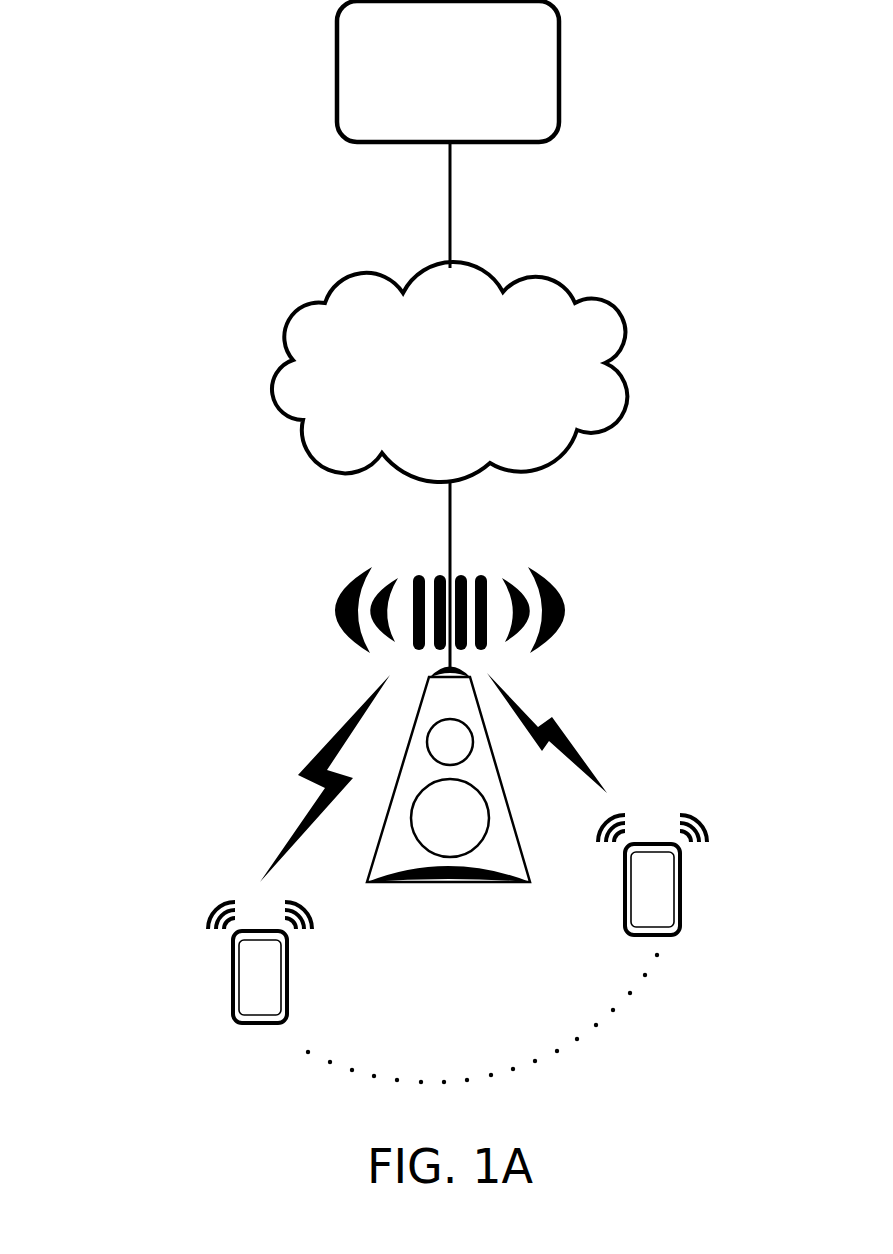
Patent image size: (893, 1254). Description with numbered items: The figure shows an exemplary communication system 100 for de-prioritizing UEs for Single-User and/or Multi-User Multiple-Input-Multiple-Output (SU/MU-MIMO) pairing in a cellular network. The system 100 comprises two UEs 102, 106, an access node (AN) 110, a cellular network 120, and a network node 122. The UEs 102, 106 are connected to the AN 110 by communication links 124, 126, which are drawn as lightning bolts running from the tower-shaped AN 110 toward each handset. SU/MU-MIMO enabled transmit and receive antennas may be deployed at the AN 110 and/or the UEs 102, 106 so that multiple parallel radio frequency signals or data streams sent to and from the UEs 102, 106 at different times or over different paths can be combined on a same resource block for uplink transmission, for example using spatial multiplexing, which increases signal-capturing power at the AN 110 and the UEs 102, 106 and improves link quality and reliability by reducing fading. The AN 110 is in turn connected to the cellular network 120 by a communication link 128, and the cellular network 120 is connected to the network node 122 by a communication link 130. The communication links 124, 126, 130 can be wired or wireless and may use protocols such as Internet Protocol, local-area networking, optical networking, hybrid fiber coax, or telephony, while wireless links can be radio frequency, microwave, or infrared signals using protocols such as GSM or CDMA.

The communication system 100 is at (78, 1045).
The UE 102 is at (682, 907).
The UE 106 is at (227, 988).
The AN 110 is at (385, 883).
The cellular network 120 is at (449, 372).
The network node 122 is at (448, 71).
The communication link 124 is at (570, 737).
The communication link 126 is at (320, 752).
The communication link 128 is at (452, 543).
The communication link 130 is at (452, 232).